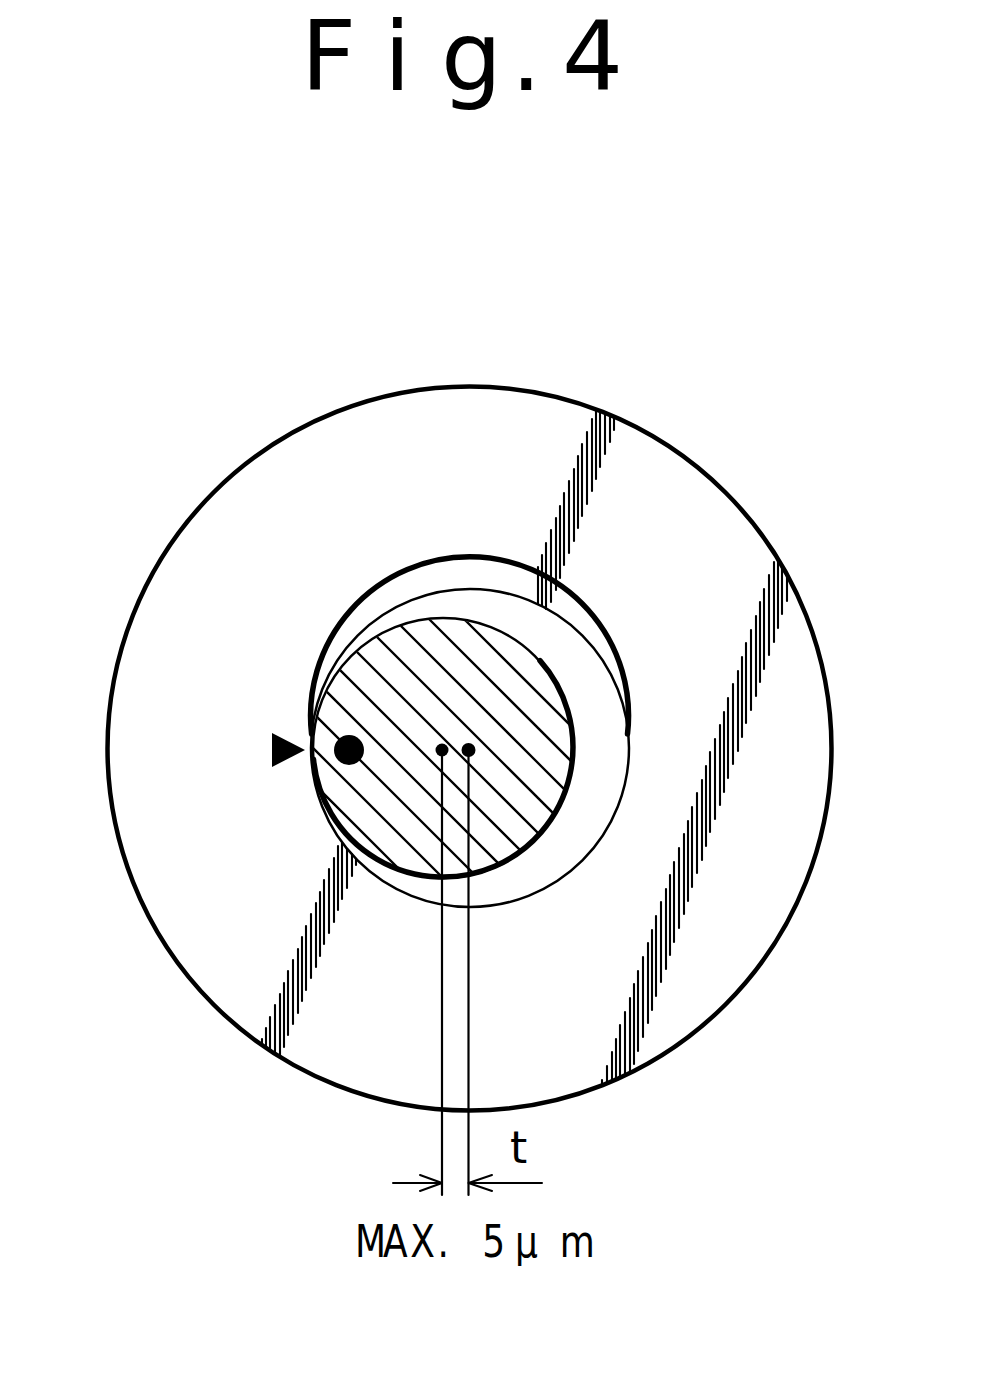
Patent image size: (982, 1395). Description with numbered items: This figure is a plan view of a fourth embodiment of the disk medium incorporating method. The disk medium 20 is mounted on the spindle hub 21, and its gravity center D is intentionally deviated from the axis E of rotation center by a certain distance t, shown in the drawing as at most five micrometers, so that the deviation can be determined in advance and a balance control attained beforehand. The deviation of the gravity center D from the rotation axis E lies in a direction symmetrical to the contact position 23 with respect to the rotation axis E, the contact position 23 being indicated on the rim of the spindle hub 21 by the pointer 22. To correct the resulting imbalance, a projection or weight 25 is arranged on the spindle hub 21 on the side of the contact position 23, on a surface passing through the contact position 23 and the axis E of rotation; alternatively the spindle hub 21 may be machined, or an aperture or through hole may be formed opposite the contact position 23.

The disk medium 20 is at (682, 490).
The spindle hub 21 is at (543, 718).
The reference point marker 22 is at (272, 755).
The contact position 23 is at (323, 817).
The projection or weight 25 is at (348, 735).
The rotation center E is at (441, 749).
The gravity center D is at (469, 749).